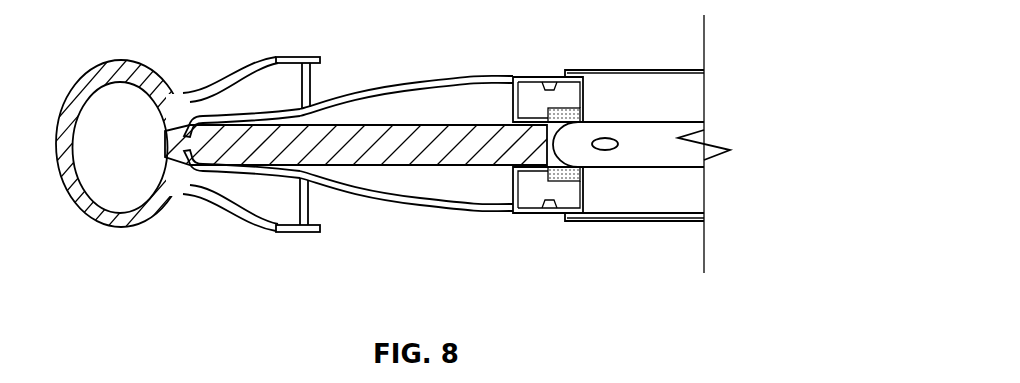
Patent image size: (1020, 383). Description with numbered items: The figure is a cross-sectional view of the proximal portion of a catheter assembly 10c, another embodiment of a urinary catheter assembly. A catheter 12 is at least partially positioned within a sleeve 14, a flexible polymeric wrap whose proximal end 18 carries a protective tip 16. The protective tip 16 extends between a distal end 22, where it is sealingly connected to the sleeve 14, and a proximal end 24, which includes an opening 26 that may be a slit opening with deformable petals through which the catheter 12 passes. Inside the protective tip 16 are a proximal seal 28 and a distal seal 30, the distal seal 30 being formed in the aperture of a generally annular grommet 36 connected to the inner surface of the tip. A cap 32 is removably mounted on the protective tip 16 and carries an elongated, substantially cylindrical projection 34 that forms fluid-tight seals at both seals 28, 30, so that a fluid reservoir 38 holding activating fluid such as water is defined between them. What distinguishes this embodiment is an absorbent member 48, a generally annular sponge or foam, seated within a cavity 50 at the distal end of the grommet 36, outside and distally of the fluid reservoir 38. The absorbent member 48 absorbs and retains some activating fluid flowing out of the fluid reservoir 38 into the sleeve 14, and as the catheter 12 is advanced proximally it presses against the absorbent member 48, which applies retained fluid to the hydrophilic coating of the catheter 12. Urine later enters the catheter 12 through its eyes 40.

The catheter assembly 10c is at (641, 290).
The catheter 12 is at (650, 128).
The sleeve 14 is at (685, 224).
The protective tip 16 is at (428, 80).
The proximal end of the sleeve 18 is at (580, 222).
The distal end of the protective tip 22 is at (563, 76).
The proximal end of the protective tip 24 is at (220, 117).
The opening 26 is at (188, 128).
The proximal seal 28 is at (243, 172).
The distal seal 30 is at (527, 168).
The cap 32 is at (195, 203).
The projection 34 is at (360, 127).
The grommet 36 is at (523, 92).
The fluid reservoir 38 is at (421, 188).
The eyes 40 is at (604, 138).
The absorbent member 48 is at (588, 176).
The cavity 50 is at (582, 117).